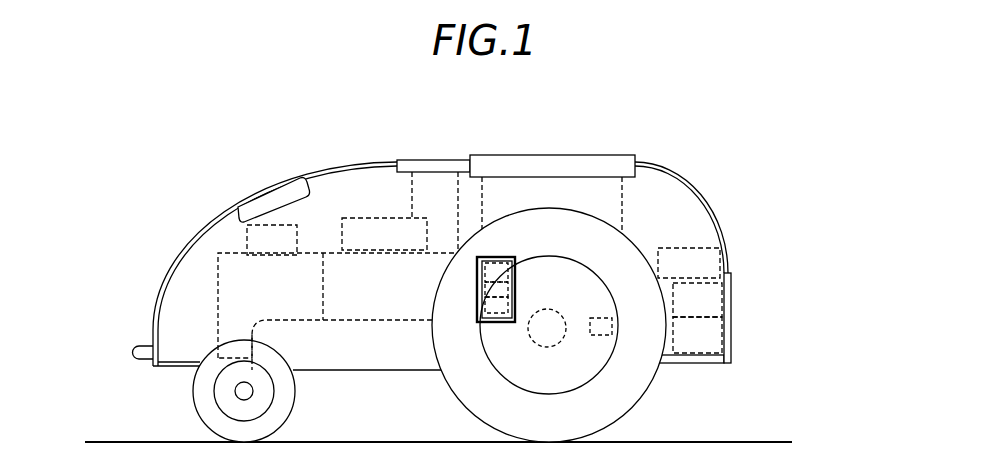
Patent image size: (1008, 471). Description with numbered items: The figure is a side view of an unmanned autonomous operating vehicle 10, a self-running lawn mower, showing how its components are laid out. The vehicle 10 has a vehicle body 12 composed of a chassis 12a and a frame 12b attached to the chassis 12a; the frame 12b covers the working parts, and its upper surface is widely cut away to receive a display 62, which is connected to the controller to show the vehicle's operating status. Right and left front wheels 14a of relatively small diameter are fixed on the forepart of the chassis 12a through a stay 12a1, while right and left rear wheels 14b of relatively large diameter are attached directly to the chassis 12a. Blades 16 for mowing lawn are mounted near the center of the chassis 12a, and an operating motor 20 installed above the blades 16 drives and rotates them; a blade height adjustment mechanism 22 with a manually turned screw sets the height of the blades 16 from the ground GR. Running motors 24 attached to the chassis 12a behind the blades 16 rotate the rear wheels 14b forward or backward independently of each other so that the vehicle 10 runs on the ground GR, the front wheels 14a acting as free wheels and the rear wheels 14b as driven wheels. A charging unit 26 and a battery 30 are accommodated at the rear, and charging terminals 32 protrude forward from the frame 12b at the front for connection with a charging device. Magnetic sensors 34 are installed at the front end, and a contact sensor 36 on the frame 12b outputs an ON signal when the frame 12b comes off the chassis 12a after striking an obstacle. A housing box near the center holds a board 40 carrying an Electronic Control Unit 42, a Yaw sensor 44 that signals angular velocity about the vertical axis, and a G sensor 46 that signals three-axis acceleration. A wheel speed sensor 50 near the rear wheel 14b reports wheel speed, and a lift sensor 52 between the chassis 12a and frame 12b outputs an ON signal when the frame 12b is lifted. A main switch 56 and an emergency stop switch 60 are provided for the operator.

The unmanned autonomous operating vehicle 10 is at (684, 173).
The vehicle body 12 is at (685, 321).
The chassis 12a is at (733, 347).
The frame 12b is at (732, 262).
The stay 12a1 is at (234, 387).
The front wheels 14a is at (199, 416).
The rear wheels 14b is at (452, 402).
The blades 16 is at (365, 356).
The operating motor 20 is at (387, 296).
The blade height adjustment mechanism 22 is at (394, 243).
The running motors 24 is at (548, 311).
The charging unit 26 is at (710, 313).
The battery 30 is at (710, 348).
The charging terminals 32 is at (143, 346).
The magnetic sensors 34 is at (278, 188).
The contact sensor 36 is at (283, 251).
The board 40 is at (502, 307).
The Electronic Control Unit 42 is at (476, 265).
The Yaw sensor 44 is at (477, 300).
The G sensor 46 is at (482, 320).
The wheel speed sensor 50 is at (603, 318).
The lift sensor 52 is at (700, 278).
The main switch 56 is at (433, 182).
The emergency stop switch 60 is at (437, 160).
The display 62 is at (556, 155).
The ground GR is at (674, 441).